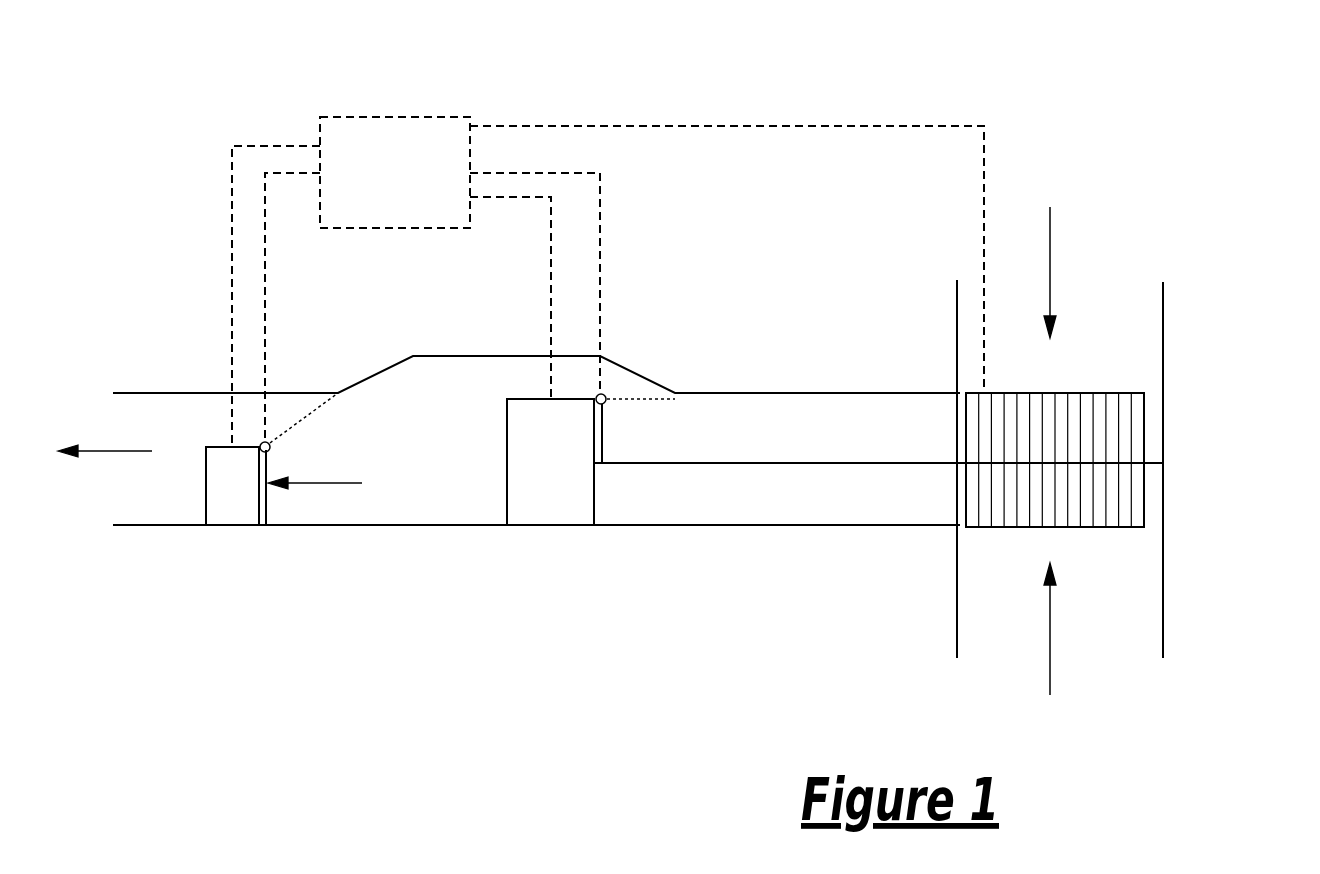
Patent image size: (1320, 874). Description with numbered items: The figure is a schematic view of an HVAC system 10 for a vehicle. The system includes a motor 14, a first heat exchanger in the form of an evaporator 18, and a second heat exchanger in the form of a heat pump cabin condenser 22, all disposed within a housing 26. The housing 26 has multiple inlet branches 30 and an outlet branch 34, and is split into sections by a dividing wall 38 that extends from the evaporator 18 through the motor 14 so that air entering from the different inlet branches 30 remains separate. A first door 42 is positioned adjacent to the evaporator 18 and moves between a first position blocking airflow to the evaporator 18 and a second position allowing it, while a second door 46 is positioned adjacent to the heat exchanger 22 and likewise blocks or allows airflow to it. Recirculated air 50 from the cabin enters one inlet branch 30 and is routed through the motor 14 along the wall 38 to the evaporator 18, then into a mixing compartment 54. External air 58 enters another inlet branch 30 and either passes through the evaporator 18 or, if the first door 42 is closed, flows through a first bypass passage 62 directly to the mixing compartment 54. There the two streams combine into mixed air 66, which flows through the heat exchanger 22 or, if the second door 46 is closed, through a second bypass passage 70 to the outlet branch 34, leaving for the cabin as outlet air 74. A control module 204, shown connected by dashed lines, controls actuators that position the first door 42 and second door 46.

The HVAC system 10 is at (1107, 94).
The motor 14 is at (1145, 430).
The evaporator 18 is at (520, 526).
The heat pump cabin condenser 22 is at (213, 526).
The housing 26 is at (1165, 318).
The inlet branches 30 is at (1105, 305).
The outlet branch 34 is at (147, 488).
The dividing wall 38 is at (767, 464).
The first door 42 is at (602, 453).
The second door 46 is at (267, 498).
The recirculated air 50 is at (1050, 643).
The mixing compartment 54 is at (413, 465).
The external air 58 is at (1052, 243).
The first bypass passage 62 is at (620, 387).
The mixed air 66 is at (320, 483).
The second bypass passage 70 is at (281, 412).
The outlet air 74 is at (110, 452).
The control module 204 is at (315, 117).